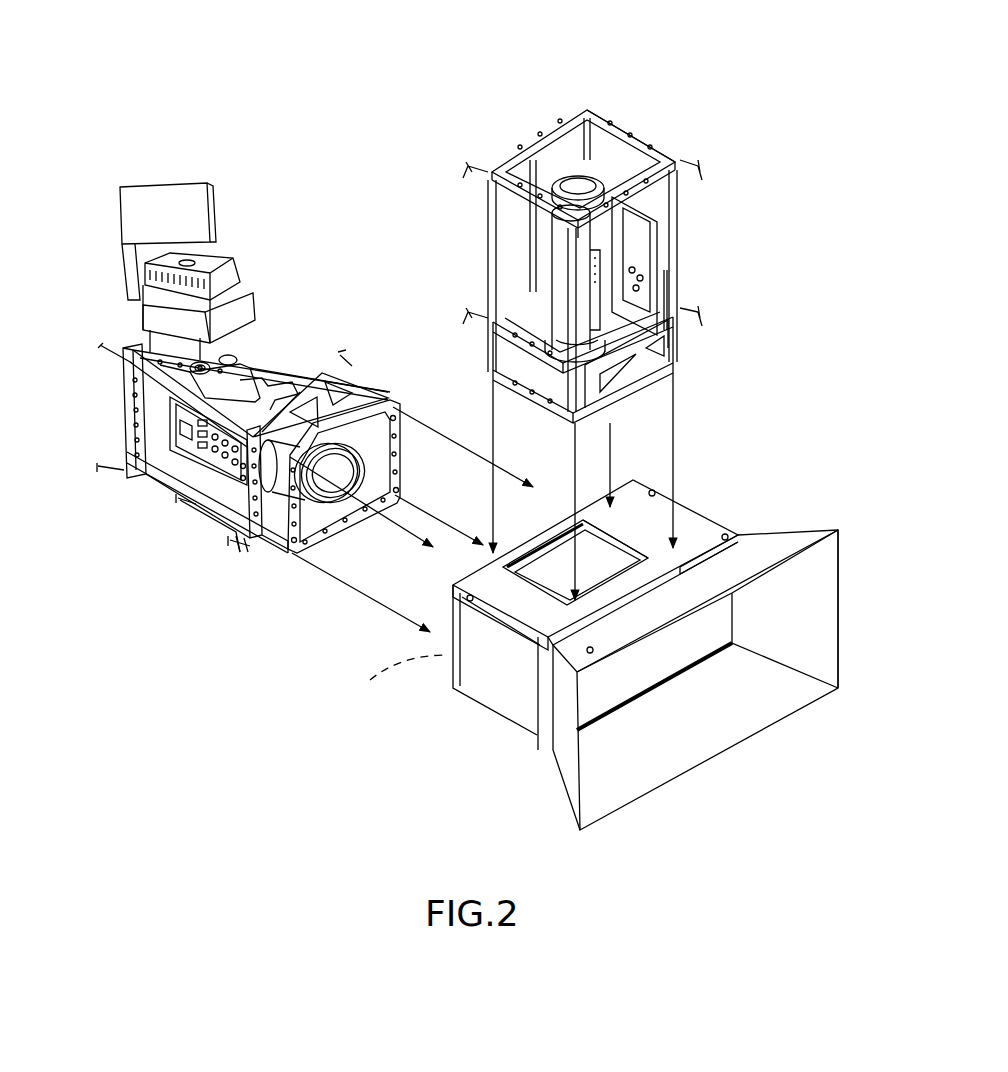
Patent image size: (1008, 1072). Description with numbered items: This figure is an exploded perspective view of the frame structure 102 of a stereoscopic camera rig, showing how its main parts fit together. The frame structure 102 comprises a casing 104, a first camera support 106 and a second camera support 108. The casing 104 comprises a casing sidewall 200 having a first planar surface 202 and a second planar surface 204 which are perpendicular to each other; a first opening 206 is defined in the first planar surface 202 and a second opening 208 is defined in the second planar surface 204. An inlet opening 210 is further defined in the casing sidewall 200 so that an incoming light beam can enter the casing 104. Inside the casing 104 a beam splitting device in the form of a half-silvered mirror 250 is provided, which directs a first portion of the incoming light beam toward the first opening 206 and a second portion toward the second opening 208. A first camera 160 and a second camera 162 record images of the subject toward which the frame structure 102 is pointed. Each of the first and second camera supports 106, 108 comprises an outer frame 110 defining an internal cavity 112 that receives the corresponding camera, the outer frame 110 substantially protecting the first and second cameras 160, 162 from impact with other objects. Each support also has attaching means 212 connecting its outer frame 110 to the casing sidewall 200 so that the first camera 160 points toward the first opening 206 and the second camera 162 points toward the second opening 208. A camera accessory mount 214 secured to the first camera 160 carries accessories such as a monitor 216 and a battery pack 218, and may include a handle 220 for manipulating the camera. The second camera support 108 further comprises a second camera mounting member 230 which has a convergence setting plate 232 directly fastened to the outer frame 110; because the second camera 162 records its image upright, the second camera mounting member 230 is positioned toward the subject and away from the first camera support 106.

The frame structure 102 is at (212, 72).
The casing 104 is at (470, 733).
The first camera support 106 is at (100, 388).
The second camera support 108 is at (640, 118).
The outer frame 110 is at (122, 408).
The internal cavity 112 is at (146, 430).
The first camera 160 is at (222, 455).
The second camera 162 is at (556, 253).
The casing sidewall 200 is at (510, 715).
The first planar surface 202 is at (391, 685).
The second planar surface 204 is at (700, 538).
The first opening 206 is at (542, 558).
The second opening 208 is at (638, 547).
The inlet opening 210 is at (714, 622).
The attaching means 212 is at (288, 556).
The camera accessory mount 214 is at (244, 368).
The monitor 216 is at (148, 205).
The battery pack 218 is at (220, 262).
The handle 220 is at (262, 402).
The second camera mounting member 230 is at (672, 283).
The convergence setting plate 232 is at (656, 228).
The half-silvered mirror 250 is at (610, 558).